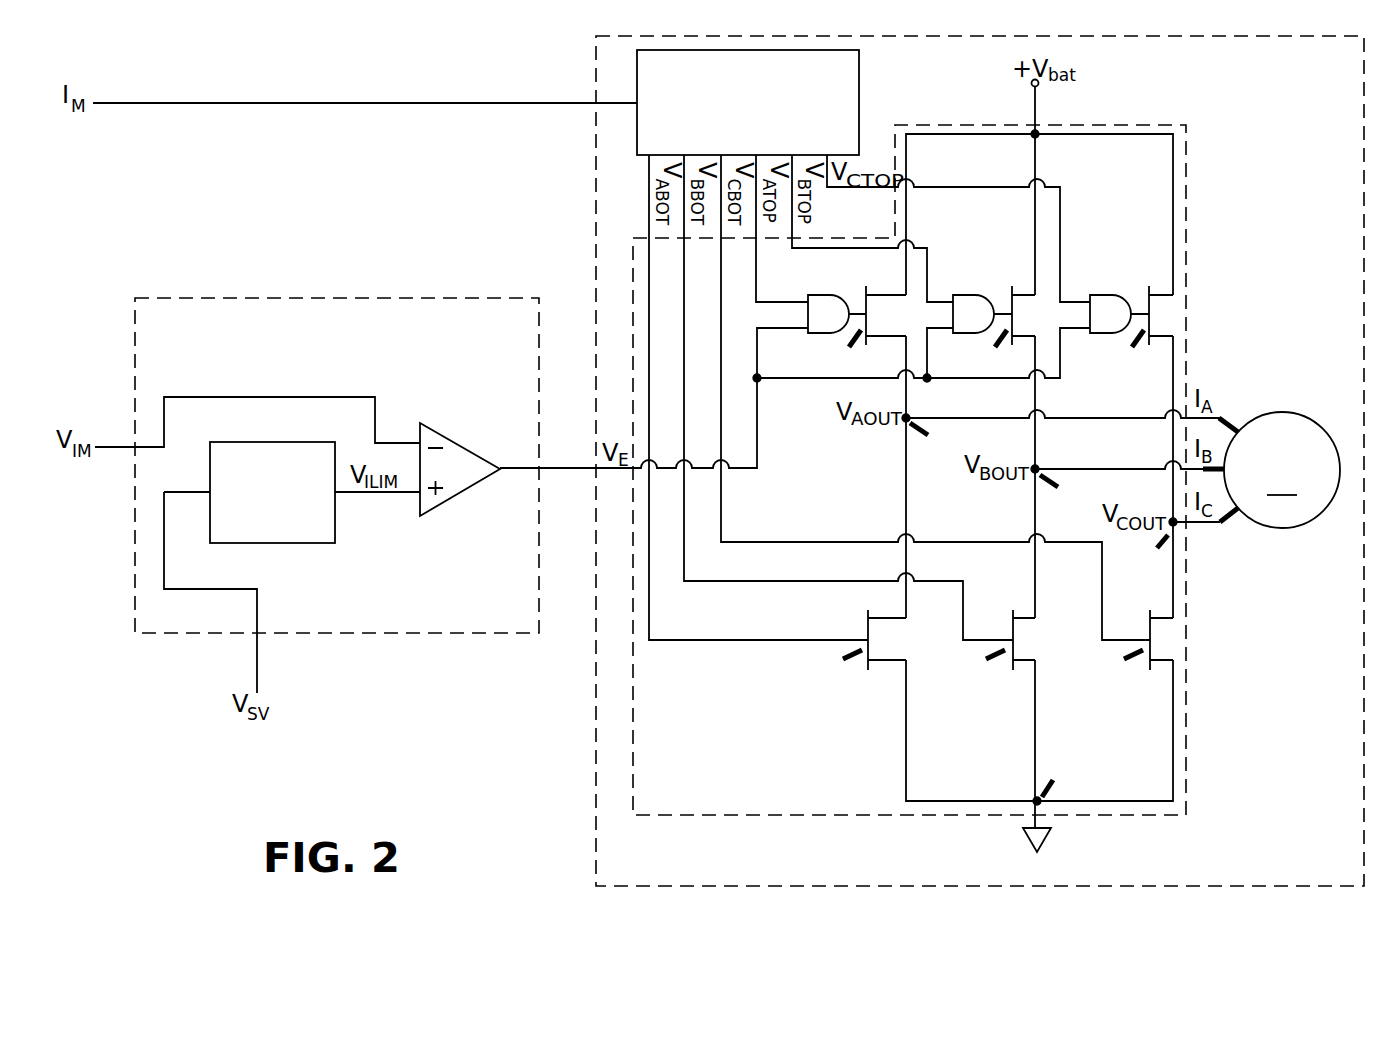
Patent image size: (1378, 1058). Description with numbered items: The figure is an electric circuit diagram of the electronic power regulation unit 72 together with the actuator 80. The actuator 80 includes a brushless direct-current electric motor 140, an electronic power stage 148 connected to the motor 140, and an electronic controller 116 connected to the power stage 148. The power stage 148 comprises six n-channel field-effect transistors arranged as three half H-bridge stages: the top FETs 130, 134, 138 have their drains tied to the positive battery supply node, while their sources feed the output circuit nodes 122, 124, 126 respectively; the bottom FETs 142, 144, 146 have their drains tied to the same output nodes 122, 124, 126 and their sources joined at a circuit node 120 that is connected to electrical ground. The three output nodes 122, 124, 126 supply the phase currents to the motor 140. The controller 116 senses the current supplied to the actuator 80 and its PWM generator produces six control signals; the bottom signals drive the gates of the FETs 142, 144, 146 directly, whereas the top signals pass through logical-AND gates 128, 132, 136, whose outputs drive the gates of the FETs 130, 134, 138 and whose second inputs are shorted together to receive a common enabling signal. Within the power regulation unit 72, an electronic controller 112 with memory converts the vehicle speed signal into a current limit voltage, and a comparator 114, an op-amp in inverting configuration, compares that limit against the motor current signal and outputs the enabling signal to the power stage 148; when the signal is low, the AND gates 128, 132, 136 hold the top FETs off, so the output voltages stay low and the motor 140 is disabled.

The electronic power regulation unit (EPRU) 72 is at (338, 298).
The actuator 80 is at (597, 744).
The electronic controller 112 is at (297, 543).
The electronic comparator 114 is at (453, 447).
The electronic controller 116 is at (853, 72).
The circuit node 120 is at (1053, 780).
The output circuit node 122 is at (930, 435).
The output circuit node 124 is at (1058, 487).
The output circuit node 126 is at (1157, 548).
The logical-AND gate 128 is at (847, 271).
The field-effect transistor 130 is at (848, 347).
The logical-AND gate 132 is at (962, 296).
The field-effect transistor 134 is at (995, 347).
The logical-AND gate 136 is at (1102, 296).
The field-effect transistor 138 is at (1131, 347).
The brushless direct-current electric motor 140 is at (1280, 412).
The field-effect transistor 142 is at (843, 659).
The field-effect transistor 144 is at (986, 659).
The field-effect transistor 146 is at (1124, 659).
The electronic power stage 148 is at (722, 817).